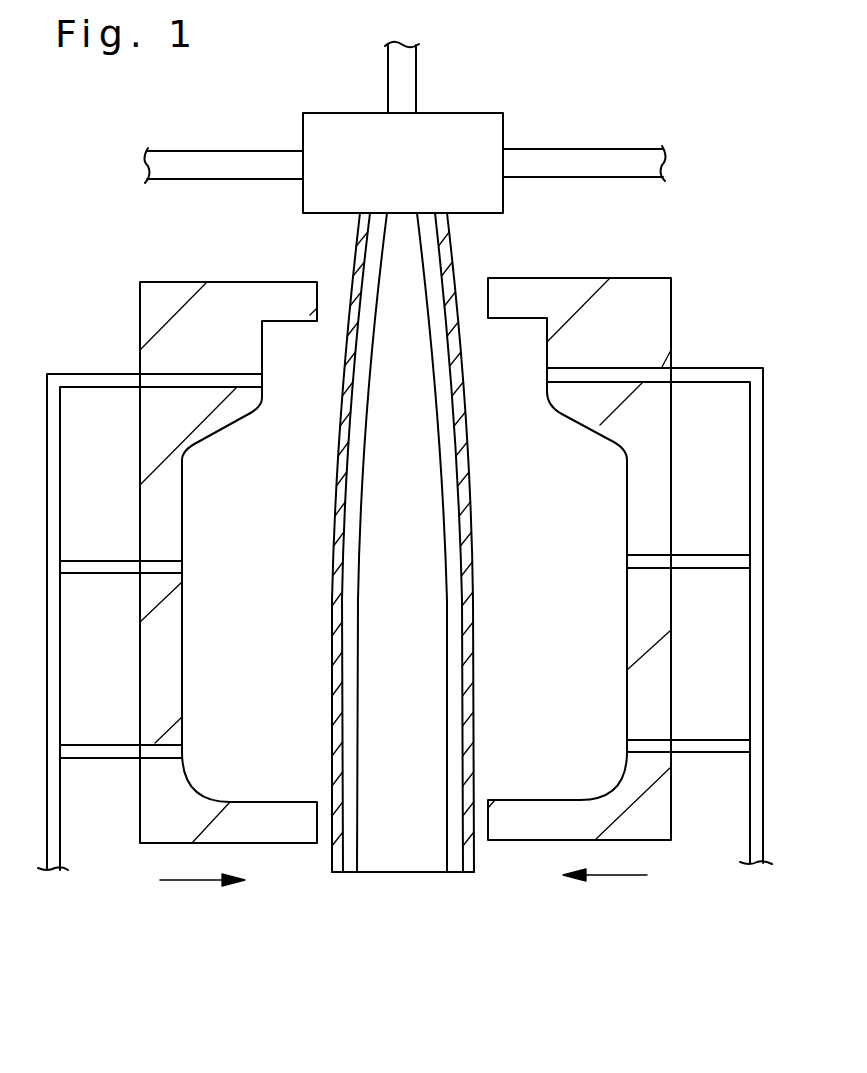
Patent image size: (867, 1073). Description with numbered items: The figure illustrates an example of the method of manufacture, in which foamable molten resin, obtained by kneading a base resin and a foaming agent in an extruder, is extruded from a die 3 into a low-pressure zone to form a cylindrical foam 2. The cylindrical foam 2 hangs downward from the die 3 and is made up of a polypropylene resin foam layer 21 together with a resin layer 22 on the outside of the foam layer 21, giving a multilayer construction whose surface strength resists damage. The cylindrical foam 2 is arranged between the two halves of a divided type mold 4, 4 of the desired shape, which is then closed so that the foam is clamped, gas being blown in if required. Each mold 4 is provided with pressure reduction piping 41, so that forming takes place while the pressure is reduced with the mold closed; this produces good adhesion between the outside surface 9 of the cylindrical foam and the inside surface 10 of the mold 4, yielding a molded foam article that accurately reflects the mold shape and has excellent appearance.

The cylindrical foam 2 is at (431, 580).
The die 3 is at (452, 122).
The mold 4 is at (406, 522).
The pressure reduction piping 41 is at (98, 374).
The outside surface 9 is at (334, 490).
The inside surface 10 is at (183, 645).
The foam layer 21 is at (347, 874).
The resin layer 22 is at (336, 874).